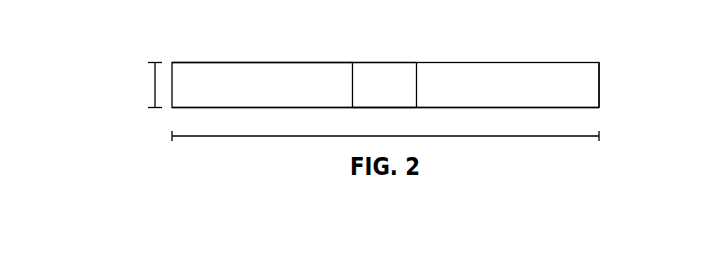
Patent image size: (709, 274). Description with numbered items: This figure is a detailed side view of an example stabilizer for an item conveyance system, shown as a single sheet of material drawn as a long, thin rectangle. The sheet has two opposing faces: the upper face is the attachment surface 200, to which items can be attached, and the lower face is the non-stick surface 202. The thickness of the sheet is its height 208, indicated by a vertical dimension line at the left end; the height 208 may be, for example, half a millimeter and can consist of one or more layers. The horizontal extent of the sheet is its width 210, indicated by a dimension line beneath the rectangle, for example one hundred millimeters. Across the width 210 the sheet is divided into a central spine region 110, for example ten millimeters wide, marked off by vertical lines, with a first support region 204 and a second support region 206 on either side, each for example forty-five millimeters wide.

The attachment surface 200 is at (493, 62).
The spine region 110 is at (385, 62).
The second support region 206 is at (268, 75).
The first support region 204 is at (592, 92).
The non-stick surface 202 is at (173, 108).
The height 208 is at (154, 82).
The width 210 is at (492, 136).